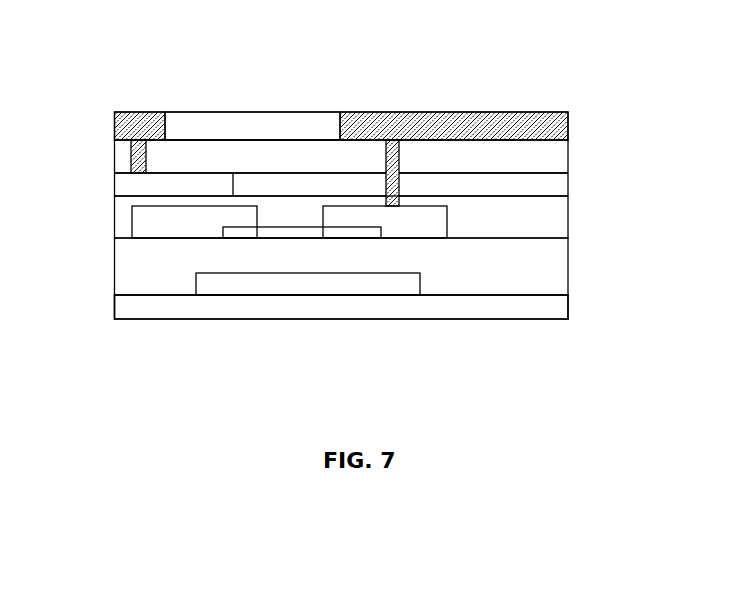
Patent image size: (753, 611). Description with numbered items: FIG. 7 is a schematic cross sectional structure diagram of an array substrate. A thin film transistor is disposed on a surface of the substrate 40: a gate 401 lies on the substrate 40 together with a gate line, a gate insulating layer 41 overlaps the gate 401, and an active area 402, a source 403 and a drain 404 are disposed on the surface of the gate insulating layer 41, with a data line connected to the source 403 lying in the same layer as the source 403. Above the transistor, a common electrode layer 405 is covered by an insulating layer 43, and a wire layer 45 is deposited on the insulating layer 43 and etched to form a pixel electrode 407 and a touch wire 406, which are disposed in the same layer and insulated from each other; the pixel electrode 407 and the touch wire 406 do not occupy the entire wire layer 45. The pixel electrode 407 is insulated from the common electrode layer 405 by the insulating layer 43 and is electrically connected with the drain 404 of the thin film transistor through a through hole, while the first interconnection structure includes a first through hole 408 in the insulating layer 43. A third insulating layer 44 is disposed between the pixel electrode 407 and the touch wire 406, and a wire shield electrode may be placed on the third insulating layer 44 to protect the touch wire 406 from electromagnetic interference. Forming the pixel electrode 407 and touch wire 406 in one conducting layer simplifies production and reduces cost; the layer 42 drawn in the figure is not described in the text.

The substrate 40 is at (388, 320).
The gate insulating layer 41 is at (552, 265).
The gate insulating layer 42 is at (552, 219).
The insulating layer 43 is at (539, 163).
The third insulating layer 44 is at (240, 118).
The wire layer 45 is at (543, 128).
The gate 401 is at (323, 279).
The active area 402 is at (283, 233).
The source 403 is at (168, 218).
The drain 404 is at (417, 224).
The common electrode layer 405 is at (536, 184).
The touch wire 406 is at (146, 123).
The pixel electrode 407 is at (468, 122).
The first through hole 408 is at (132, 162).